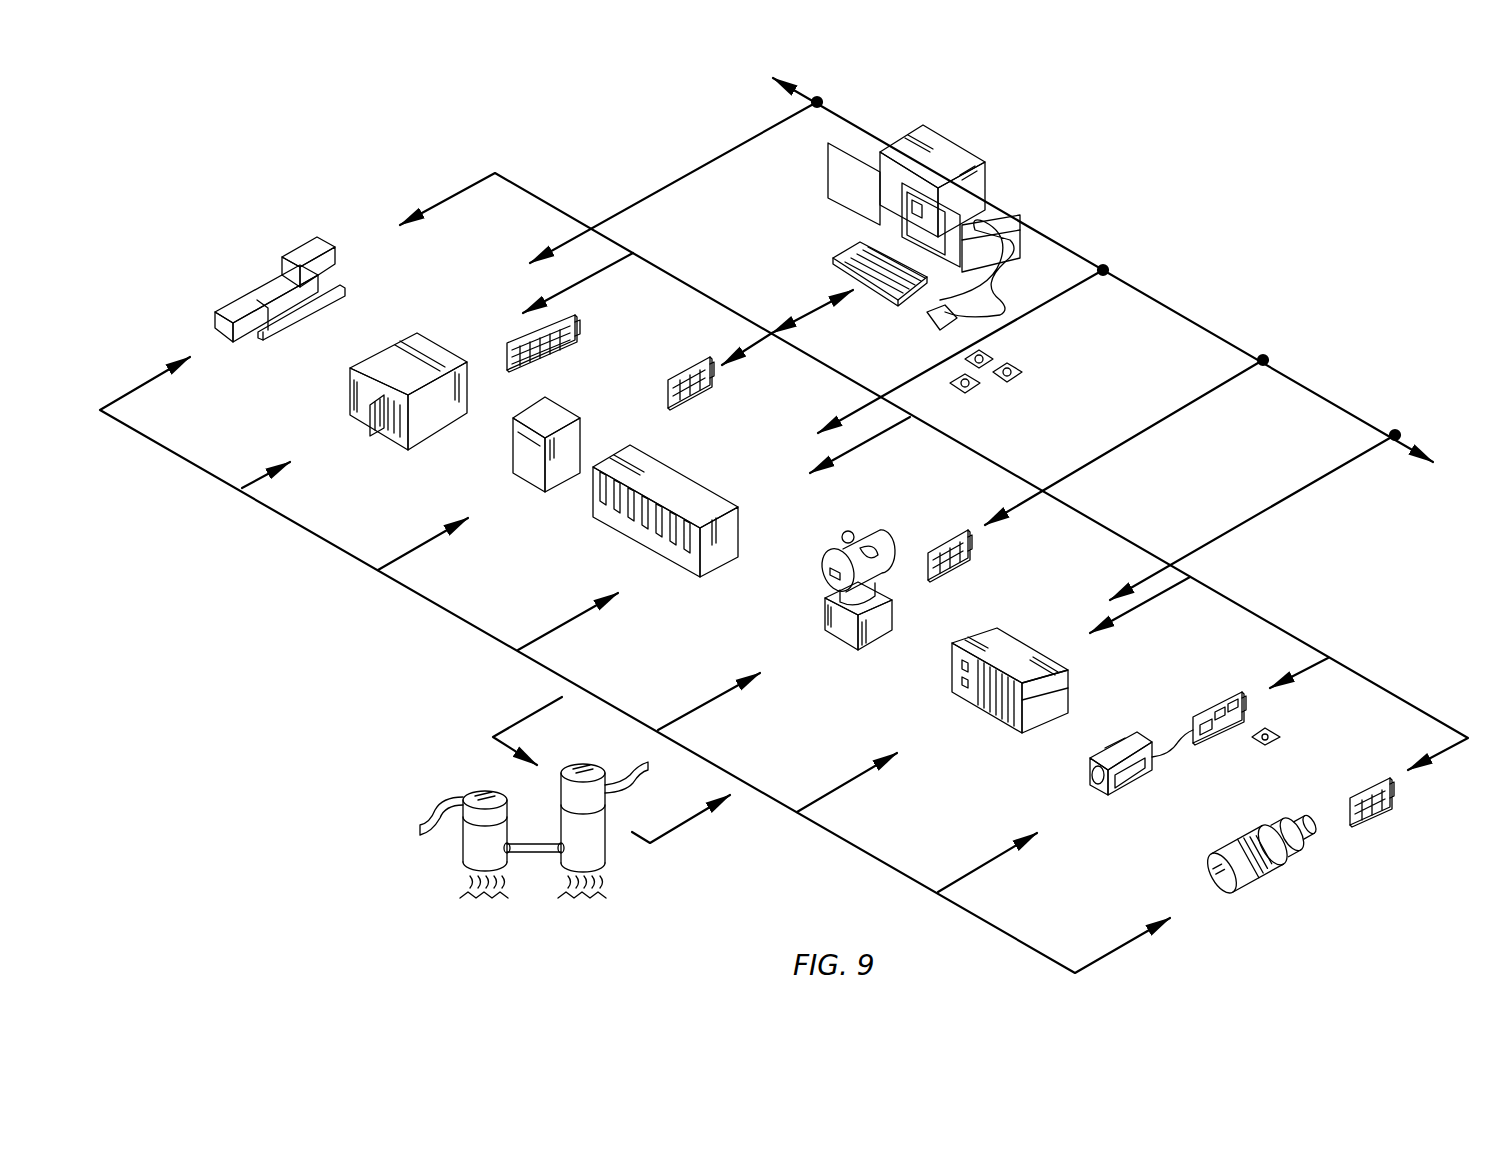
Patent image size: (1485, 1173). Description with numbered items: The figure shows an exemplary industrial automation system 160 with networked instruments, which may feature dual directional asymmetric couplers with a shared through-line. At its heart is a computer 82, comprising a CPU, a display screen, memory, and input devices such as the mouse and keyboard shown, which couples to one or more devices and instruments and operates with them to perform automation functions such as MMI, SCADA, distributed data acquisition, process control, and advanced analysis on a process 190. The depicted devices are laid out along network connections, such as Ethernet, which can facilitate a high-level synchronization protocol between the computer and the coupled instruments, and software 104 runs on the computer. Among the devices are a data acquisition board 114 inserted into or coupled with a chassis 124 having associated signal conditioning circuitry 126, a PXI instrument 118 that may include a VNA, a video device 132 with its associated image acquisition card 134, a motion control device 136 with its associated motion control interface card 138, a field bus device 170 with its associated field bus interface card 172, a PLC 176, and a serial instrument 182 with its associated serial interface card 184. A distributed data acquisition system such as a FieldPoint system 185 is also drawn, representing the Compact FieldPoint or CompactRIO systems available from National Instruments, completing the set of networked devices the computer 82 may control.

The computer 82 is at (953, 143).
The software 104 is at (990, 380).
The data acquisition board 114 is at (550, 352).
The PXI instrument 118 is at (985, 708).
The chassis 124 is at (372, 362).
The signal conditioning circuitry 126 is at (378, 435).
The video device 132 is at (1120, 790).
The image acquisition card 134 is at (1212, 708).
The motion control device 136 is at (1262, 878).
The motion control interface card 138 is at (1377, 810).
The industrial automation system 160 is at (1292, 236).
The field bus device 170 is at (840, 640).
The field bus interface card 172 is at (955, 563).
The PLC 176 is at (680, 480).
The serial instrument 182 is at (530, 478).
The serial interface card 184 is at (683, 372).
The FieldPoint system 185 is at (290, 248).
The process 190 is at (437, 810).